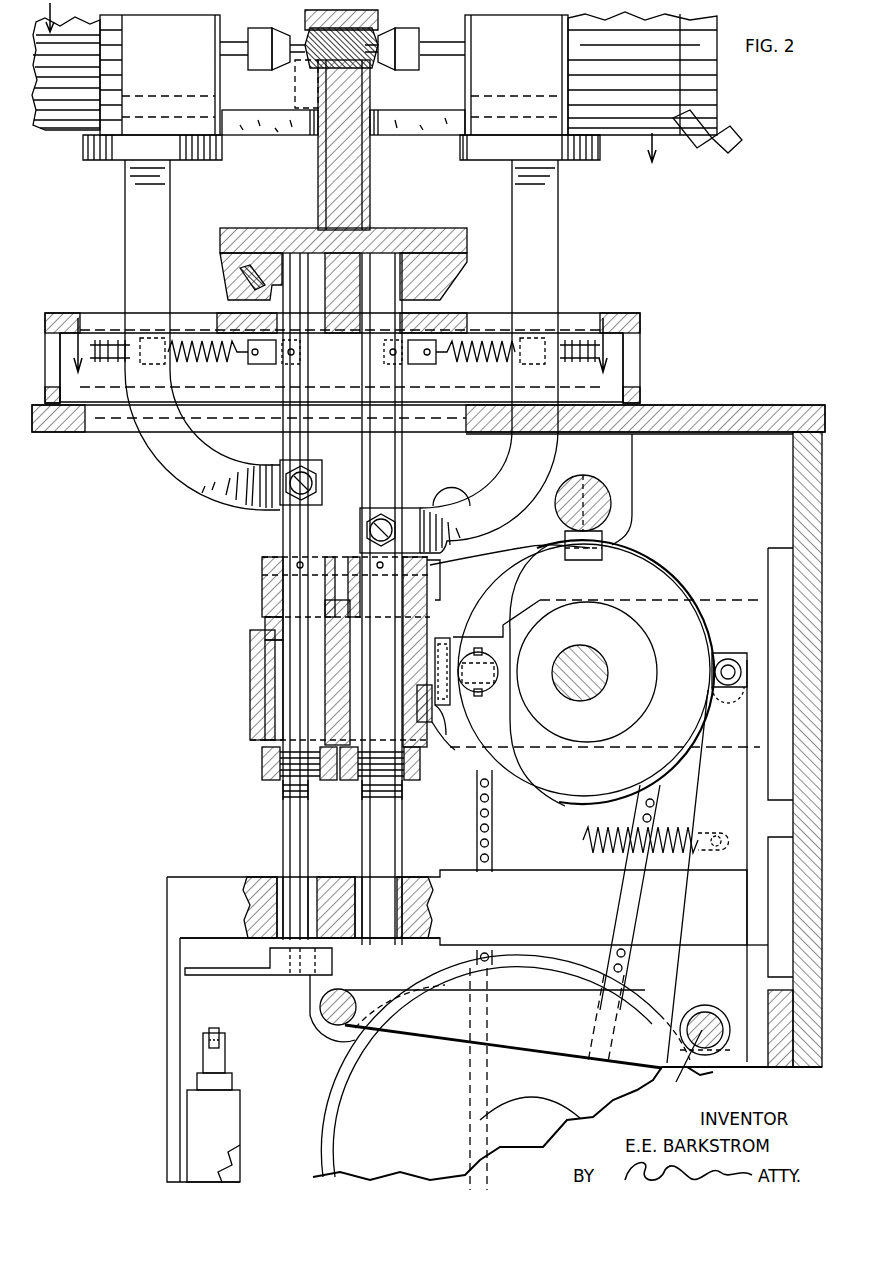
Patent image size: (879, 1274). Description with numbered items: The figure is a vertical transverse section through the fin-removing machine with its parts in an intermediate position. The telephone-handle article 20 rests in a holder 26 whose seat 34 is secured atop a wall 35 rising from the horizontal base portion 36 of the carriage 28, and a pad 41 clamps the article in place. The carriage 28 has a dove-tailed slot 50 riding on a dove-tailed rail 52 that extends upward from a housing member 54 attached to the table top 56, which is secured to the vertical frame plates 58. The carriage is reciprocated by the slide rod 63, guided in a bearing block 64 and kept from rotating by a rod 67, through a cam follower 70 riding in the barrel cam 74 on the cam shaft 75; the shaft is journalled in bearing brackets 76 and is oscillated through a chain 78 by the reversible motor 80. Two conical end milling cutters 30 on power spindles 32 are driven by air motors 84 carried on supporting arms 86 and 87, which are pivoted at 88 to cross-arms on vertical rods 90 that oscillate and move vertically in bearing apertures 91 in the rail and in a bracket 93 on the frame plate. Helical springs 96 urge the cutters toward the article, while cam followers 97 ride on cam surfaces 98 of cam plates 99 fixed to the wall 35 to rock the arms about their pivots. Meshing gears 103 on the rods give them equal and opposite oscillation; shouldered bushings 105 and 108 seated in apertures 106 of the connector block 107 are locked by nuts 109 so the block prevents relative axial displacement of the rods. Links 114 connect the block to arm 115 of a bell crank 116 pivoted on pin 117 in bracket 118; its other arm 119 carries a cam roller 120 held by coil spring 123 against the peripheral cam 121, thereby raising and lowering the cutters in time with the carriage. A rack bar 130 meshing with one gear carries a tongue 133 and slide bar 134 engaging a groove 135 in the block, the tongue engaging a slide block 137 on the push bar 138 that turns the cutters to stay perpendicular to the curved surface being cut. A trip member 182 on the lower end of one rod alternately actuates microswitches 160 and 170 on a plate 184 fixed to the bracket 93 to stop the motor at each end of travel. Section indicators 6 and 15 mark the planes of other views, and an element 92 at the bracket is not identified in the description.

The section line 6 is at (339, 357).
The section line 15 is at (364, 86).
The article 20 is at (375, 34).
The holder 26 is at (296, 76).
The carriage 28 is at (222, 228).
The conical shaped end milling cutters 30 is at (300, 45).
The power actuated spindles 32 is at (235, 42).
The seat or supporting member 34 is at (372, 88).
The wall 35 is at (355, 180).
The horizontal base portion 36 is at (440, 230).
The pad 41 is at (378, 12).
The dove-tailed slot 50 is at (425, 245).
The dove-tailed rail or guide 52 is at (430, 268).
The housing member 54 is at (630, 313).
The table top or plate 56 is at (742, 405).
The frame plates 58 is at (793, 485).
The actuating or slide rod 63 is at (611, 495).
The bearing block 64 is at (632, 450).
The rod 67 is at (455, 495).
The cam follower 70 is at (605, 530).
The barrel cam 74 is at (657, 560).
The cam shaft 75 is at (598, 668).
The bearing brackets 76 is at (725, 605).
The chain 78 is at (492, 843).
The reversible motor 80 is at (325, 1140).
The motors 84 is at (45, 135).
The supporting arm 86 is at (125, 210).
The supporting arm 87 is at (558, 213).
The pivot 88 is at (370, 520).
The supporting elements or rods 90 is at (400, 448).
The bearing apertures 91 is at (345, 320).
The bushing 92 is at (283, 877).
The bracket 93 is at (195, 875).
The helical springs 96 is at (195, 365).
The cam followers 97 is at (268, 122).
The cam surfaces 98 is at (312, 135).
The cam plates 99 is at (318, 175).
The gears 103 is at (380, 567).
The shouldered bushings 105 is at (262, 620).
The apertures 106 is at (248, 640).
The connector member or block 107 is at (248, 668).
The shouldered bushings 108 is at (258, 742).
The lock nuts 109 is at (258, 765).
The links 114 is at (325, 987).
The arm 115 is at (335, 1026).
The bell crank member 116 is at (647, 1085).
The pin 117 is at (685, 1068).
The bracket 118 is at (763, 1067).
The arm 119 is at (715, 917).
The cam roller 120 is at (745, 640).
The peripheral cam 121 is at (680, 565).
The coil spring 123 is at (610, 855).
The rack bar 130 is at (440, 565).
The tongue or bar 133 is at (427, 590).
The slide bar 134 is at (440, 712).
The groove 135 is at (450, 755).
The slide block or member 137 is at (450, 640).
The push bar 138 is at (490, 660).
The microswitch 160 is at (205, 1115).
The microswitch 170 is at (240, 1165).
The trip member 182 is at (210, 970).
The plate 184 is at (167, 1003).